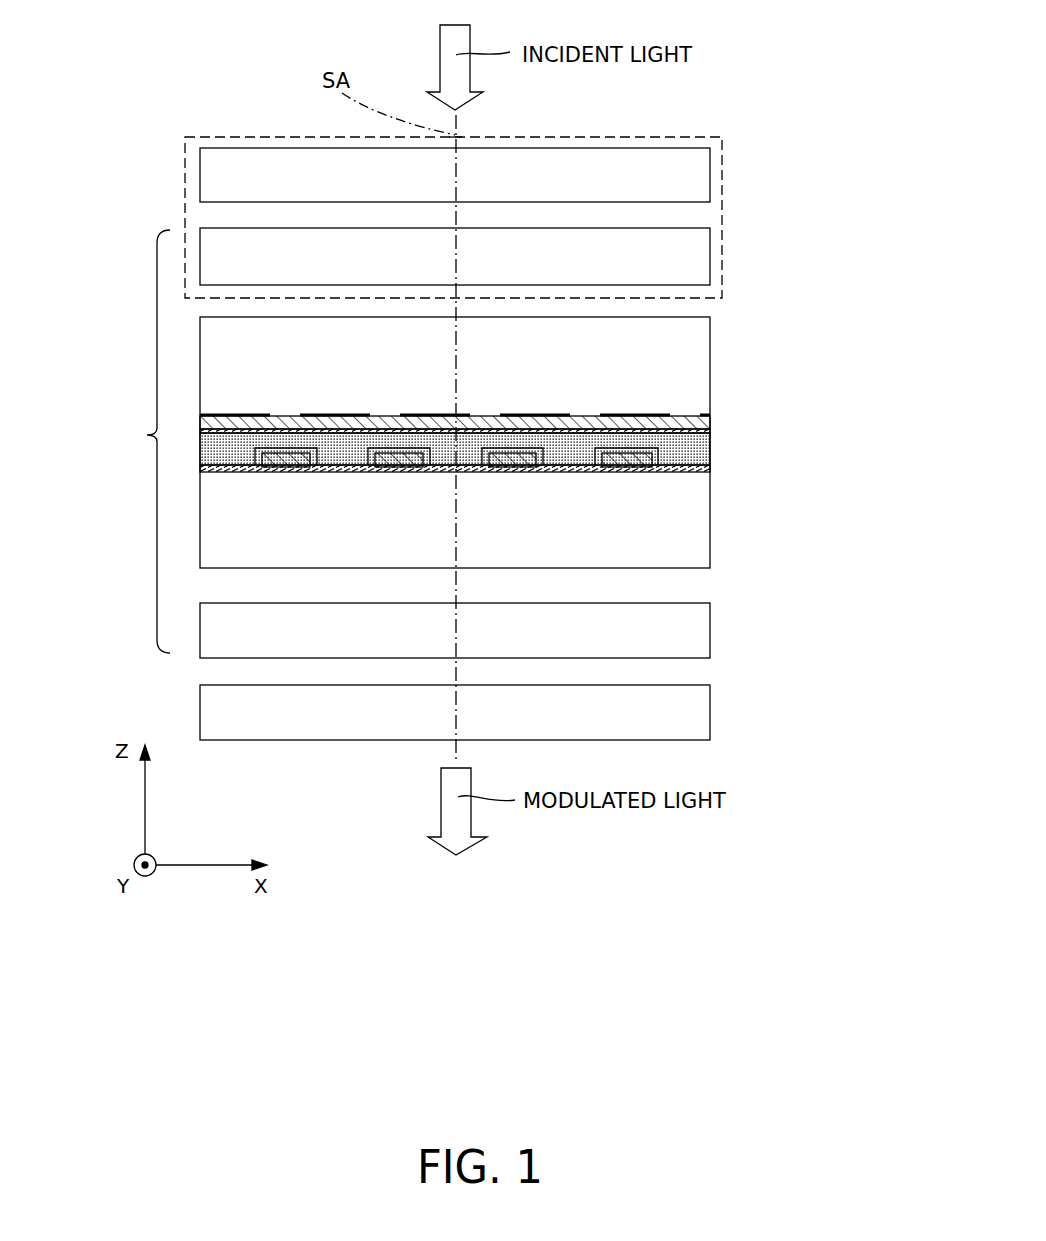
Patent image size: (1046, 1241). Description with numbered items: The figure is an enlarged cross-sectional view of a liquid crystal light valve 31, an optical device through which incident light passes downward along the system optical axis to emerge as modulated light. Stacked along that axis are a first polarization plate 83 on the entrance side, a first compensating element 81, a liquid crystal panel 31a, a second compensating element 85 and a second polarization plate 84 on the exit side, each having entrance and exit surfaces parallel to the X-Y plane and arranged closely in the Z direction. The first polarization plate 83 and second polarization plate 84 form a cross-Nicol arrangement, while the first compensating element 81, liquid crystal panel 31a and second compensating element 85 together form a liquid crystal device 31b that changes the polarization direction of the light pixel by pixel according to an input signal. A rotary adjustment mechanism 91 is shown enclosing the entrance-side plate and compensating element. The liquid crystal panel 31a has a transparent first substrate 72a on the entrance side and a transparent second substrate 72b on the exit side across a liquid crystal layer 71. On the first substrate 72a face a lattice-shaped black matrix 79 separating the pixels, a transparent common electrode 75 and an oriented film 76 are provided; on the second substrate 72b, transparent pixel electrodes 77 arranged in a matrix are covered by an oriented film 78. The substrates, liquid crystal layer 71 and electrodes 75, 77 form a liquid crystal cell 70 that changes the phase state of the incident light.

The liquid crystal light valve 31 is at (816, 34).
The liquid crystal panel 31a is at (768, 312).
The liquid crystal device 31b is at (129, 441).
The rotary adjustment mechanism 91 is at (185, 215).
The first polarization plate 83 is at (697, 173).
The first compensating element 81 is at (697, 255).
The liquid crystal cell 70 is at (528, 457).
The first substrate 72a is at (697, 355).
The second substrate 72b is at (697, 517).
The black matrix 79 is at (712, 412).
The common electrode 75 is at (712, 420).
The oriented film 76 is at (712, 431).
The liquid crystal layer 71 is at (712, 448).
The oriented film 78 is at (712, 467).
The pixel electrode 77 is at (625, 472).
The second compensating element 85 is at (697, 633).
The second polarization plate 84 is at (697, 720).